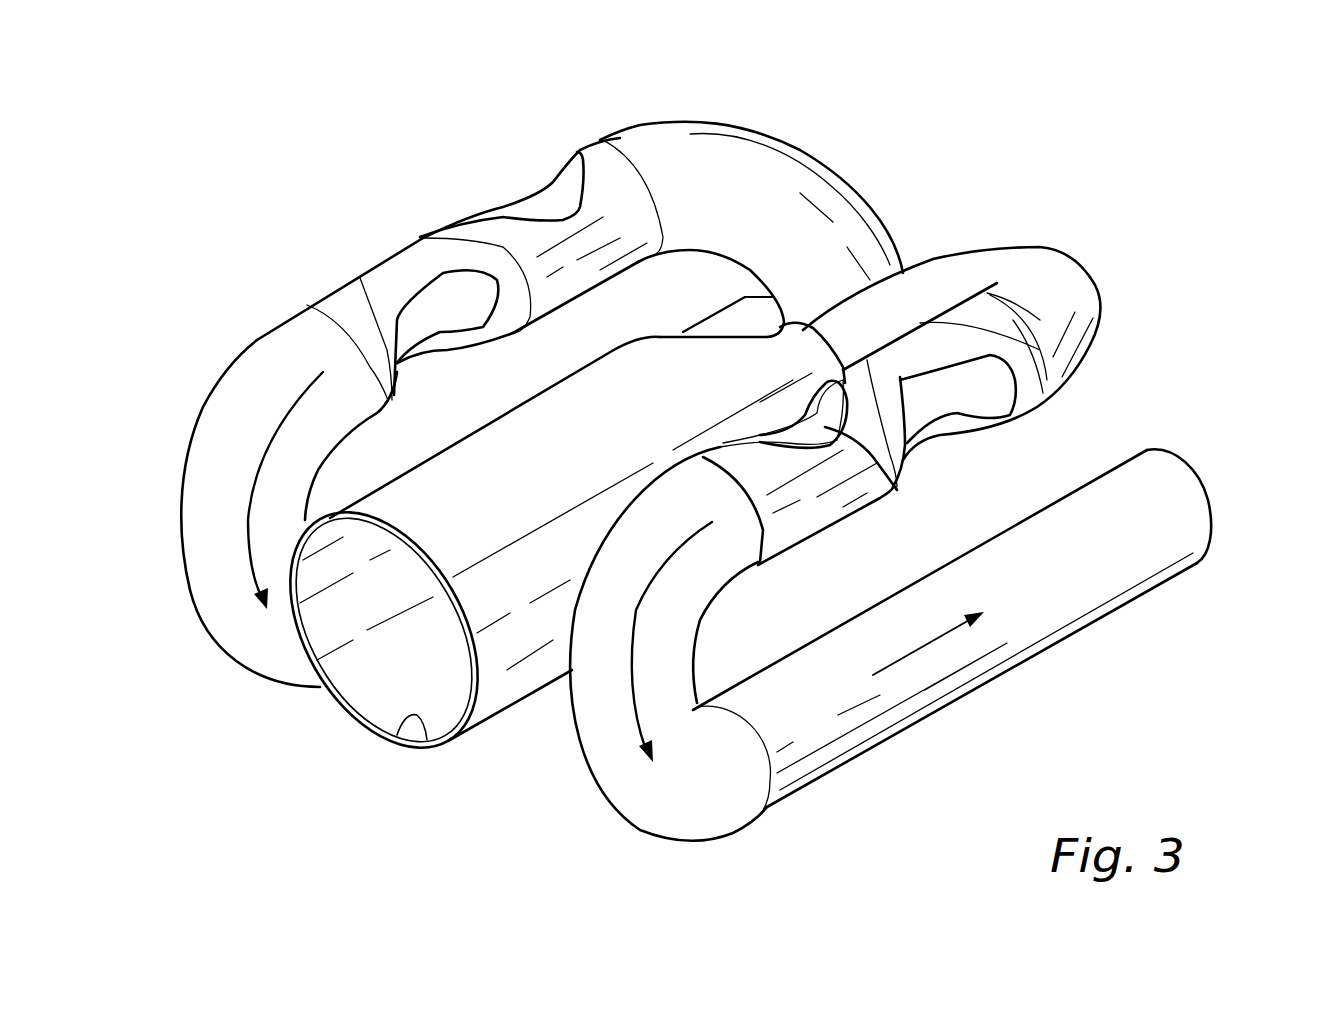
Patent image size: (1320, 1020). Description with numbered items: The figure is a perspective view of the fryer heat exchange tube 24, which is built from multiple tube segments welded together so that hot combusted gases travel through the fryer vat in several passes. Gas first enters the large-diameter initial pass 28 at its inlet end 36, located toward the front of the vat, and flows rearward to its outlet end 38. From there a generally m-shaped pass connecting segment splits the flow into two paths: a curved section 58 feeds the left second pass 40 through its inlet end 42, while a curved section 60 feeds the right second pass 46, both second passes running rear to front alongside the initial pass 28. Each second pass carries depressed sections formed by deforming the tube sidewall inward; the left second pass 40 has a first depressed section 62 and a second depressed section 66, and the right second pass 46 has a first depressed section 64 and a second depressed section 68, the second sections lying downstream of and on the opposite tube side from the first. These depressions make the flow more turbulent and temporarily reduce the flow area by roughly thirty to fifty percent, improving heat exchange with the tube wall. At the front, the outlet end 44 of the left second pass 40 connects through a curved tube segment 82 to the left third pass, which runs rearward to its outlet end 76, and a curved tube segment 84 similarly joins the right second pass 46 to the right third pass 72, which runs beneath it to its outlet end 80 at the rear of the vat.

The heat exchange tube 24 is at (822, 130).
The initial pass 28 is at (518, 673).
The inlet end 36 is at (403, 722).
The outlet end 38 is at (793, 352).
The left second pass 40 is at (423, 238).
The inlet end 42 is at (623, 137).
The outlet end 44 is at (295, 343).
The right second pass 46 is at (803, 515).
The curved section 58 is at (715, 177).
The curved section 60 is at (1028, 270).
The first depressed section 62 is at (555, 195).
The first depressed section 64 is at (975, 397).
The second depressed section 66 is at (400, 278).
The second depressed section 68 is at (893, 488).
The right third pass 72 is at (862, 717).
The outlet end 76 is at (753, 310).
The outlet end 80 is at (1197, 495).
The curved tube segment 82 is at (203, 553).
The curved tube segment 84 is at (642, 790).